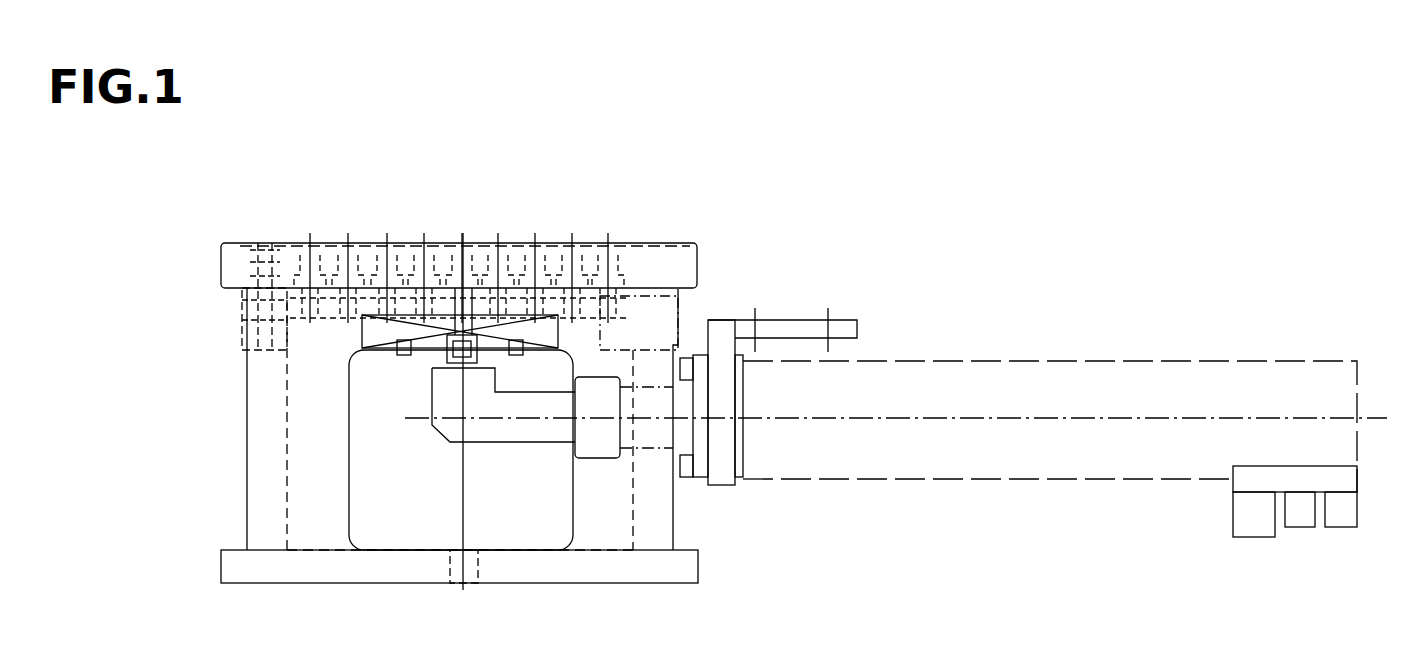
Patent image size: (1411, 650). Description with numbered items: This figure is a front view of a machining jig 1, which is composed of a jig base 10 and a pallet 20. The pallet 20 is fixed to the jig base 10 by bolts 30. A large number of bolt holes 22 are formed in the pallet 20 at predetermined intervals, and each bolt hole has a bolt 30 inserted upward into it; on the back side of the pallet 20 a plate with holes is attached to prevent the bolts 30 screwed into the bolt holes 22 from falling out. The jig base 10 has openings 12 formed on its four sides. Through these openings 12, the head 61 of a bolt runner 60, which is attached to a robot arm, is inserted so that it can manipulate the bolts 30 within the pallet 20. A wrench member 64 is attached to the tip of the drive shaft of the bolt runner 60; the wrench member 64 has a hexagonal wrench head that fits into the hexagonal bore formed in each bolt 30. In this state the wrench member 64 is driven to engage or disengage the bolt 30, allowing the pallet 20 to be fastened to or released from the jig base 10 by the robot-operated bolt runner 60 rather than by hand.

The machining jig 1 is at (185, 425).
The jig base 10 is at (266, 492).
The openings 12 is at (542, 537).
The pallet 20 is at (283, 260).
The bolt holes 22 is at (563, 250).
The bolts 30 is at (245, 322).
The bolt runner 60 is at (1003, 460).
The head 61 is at (500, 432).
The wrench member 64 is at (452, 350).